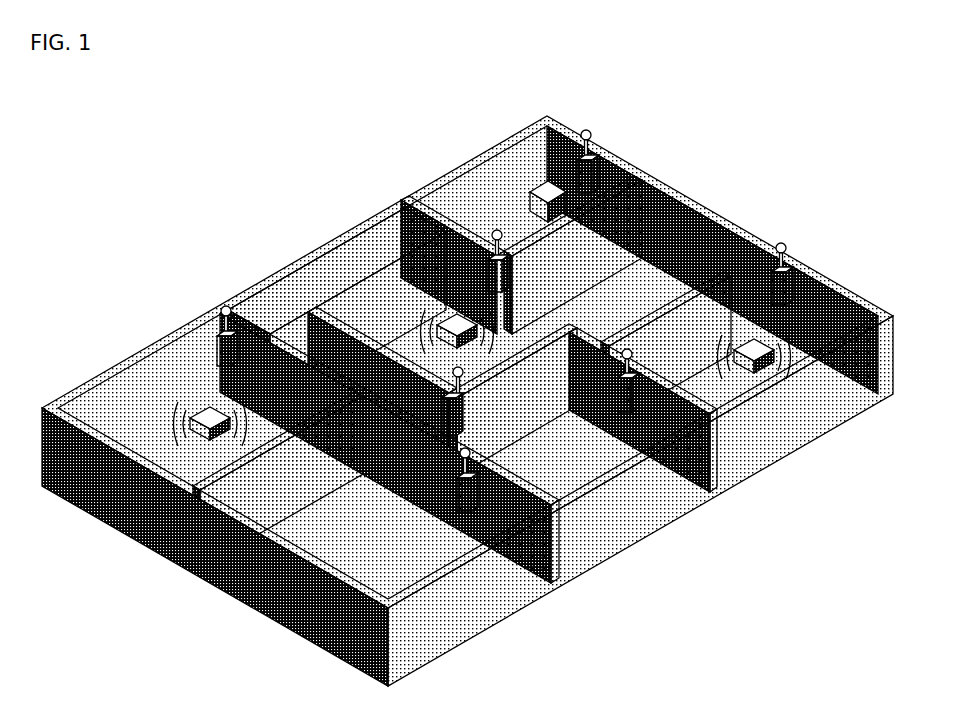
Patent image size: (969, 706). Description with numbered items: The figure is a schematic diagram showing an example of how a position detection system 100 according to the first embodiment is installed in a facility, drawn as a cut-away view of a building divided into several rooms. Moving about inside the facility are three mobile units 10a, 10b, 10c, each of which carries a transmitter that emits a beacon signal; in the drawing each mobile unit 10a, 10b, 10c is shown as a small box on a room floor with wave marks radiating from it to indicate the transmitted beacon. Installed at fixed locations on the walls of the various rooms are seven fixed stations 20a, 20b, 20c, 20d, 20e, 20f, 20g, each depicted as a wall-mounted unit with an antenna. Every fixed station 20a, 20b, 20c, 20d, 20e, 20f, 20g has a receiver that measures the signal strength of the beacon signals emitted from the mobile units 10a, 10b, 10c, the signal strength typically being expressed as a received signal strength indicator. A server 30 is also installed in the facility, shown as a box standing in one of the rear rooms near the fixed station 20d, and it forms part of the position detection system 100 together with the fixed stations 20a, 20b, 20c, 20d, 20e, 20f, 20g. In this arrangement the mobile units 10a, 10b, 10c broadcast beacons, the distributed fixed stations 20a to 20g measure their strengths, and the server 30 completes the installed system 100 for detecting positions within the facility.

The position detection system 100 is at (330, 192).
The mobile unit 10a is at (207, 413).
The mobile unit 10b is at (445, 328).
The mobile unit 10c is at (754, 370).
The server 30 is at (540, 188).
The fixed station 20a is at (228, 340).
The fixed station 20b is at (490, 270).
The fixed station 20c is at (470, 512).
The fixed station 20d is at (594, 172).
The fixed station 20e is at (630, 405).
The fixed station 20f is at (790, 290).
The fixed station 20g is at (462, 434).